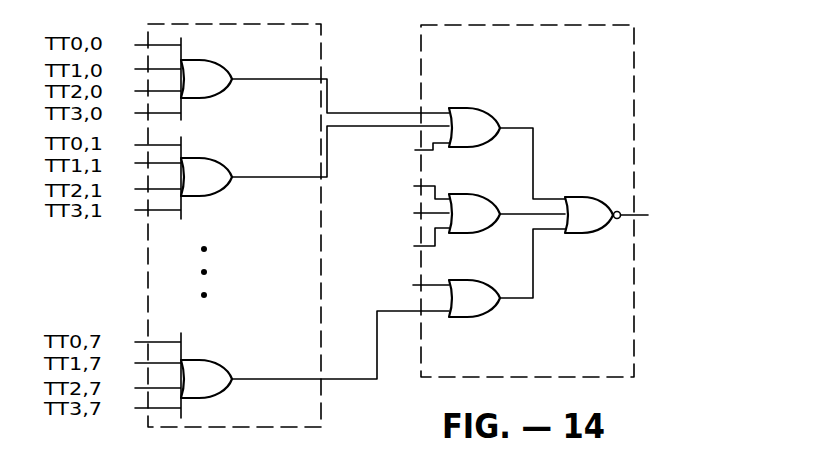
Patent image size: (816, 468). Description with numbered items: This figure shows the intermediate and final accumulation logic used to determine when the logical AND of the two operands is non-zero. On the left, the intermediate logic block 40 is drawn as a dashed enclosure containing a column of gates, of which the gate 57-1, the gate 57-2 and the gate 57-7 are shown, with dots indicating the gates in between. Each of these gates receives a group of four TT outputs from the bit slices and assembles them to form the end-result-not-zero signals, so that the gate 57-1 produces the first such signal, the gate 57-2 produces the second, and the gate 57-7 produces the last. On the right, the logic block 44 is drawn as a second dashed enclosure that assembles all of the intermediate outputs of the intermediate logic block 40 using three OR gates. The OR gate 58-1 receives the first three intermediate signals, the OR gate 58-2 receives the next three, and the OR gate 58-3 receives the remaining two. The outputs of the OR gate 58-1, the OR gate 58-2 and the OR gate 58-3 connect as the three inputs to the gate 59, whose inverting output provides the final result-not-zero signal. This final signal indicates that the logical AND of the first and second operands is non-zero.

The intermediate logic block 40 is at (314, 35).
The logic block 44 is at (553, 33).
The gate 57-1 is at (209, 69).
The gate 57-2 is at (204, 170).
The gate 57-7 is at (206, 372).
The OR gate 58-1 is at (468, 114).
The OR gate 58-2 is at (459, 202).
The OR gate 58-3 is at (462, 289).
The gate 59 is at (579, 204).